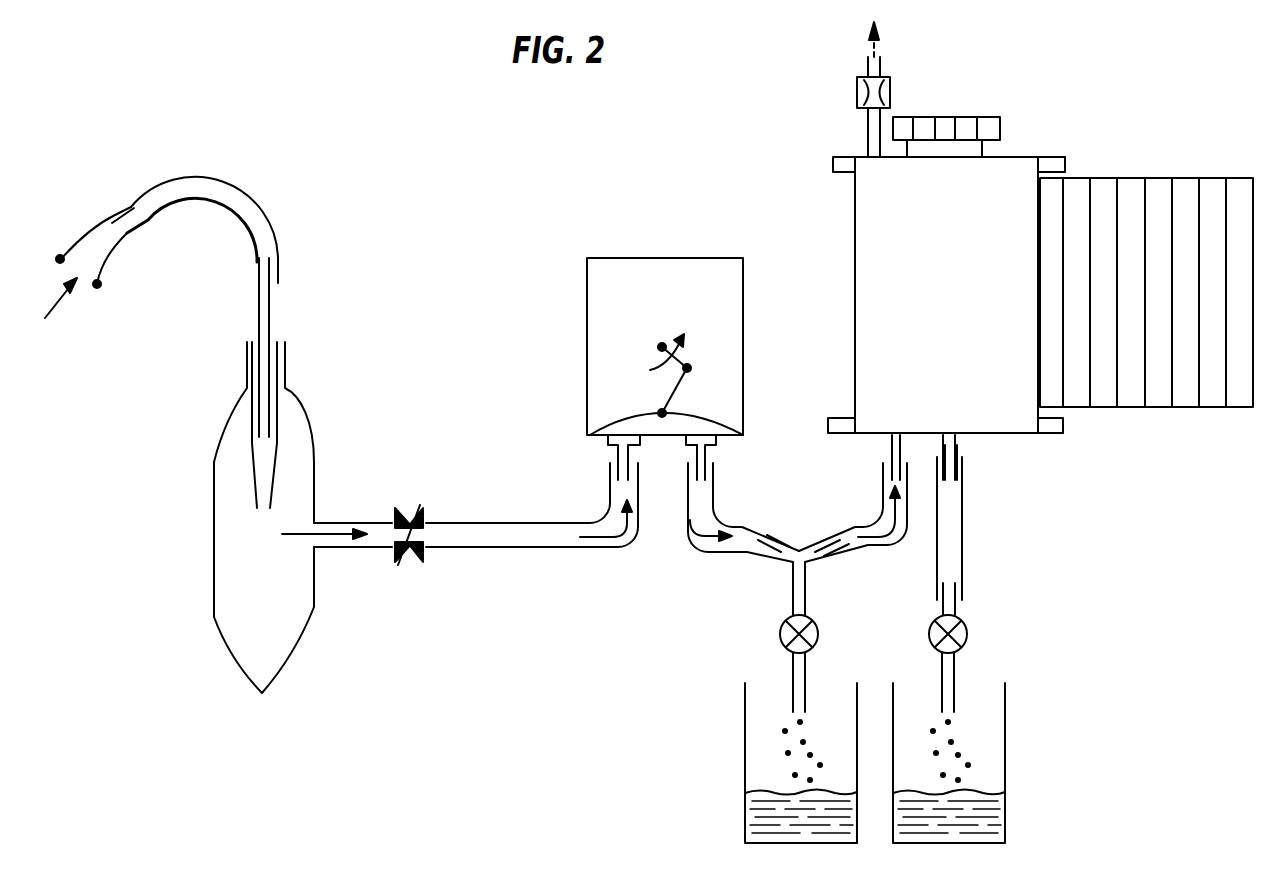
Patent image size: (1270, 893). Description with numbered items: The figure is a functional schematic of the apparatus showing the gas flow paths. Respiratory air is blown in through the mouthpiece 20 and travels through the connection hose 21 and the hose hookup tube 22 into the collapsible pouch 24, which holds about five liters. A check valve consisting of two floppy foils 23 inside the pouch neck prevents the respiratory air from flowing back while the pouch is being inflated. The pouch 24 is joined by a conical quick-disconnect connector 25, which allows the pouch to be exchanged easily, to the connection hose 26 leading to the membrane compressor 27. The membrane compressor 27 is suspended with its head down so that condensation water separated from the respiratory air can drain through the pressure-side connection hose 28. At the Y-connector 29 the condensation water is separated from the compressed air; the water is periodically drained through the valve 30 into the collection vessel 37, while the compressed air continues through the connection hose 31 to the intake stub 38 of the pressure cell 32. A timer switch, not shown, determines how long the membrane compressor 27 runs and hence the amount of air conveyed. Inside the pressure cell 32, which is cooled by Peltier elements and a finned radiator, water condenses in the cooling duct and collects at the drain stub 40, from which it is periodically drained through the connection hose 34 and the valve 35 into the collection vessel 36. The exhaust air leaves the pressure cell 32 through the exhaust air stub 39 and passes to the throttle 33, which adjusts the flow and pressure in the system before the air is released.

The mouthpiece 20 is at (100, 265).
The connection hose 21 is at (190, 185).
The hose hookup tube 22 is at (268, 320).
The floppy foils 23 is at (270, 468).
The collapsible pouch 24 is at (281, 601).
The conical quick-disconnect connector 25 is at (413, 505).
The connection hose 26 is at (515, 533).
The membrane compressor 27 is at (686, 326).
The pressure-side connection hose 28 is at (737, 541).
The Y-connector 29 is at (800, 605).
The valve 30 is at (780, 627).
The connection hose 31 is at (862, 528).
The pressure cell 32 is at (962, 304).
The throttle 33 is at (857, 93).
The connection hose 34 is at (950, 555).
The valve 35 is at (967, 625).
The collection vessel 36 is at (987, 762).
The collection vessel 37 is at (772, 758).
The intake stub 38 is at (887, 450).
The exhaust air stub 39 is at (868, 138).
The drain stub 40 is at (953, 450).